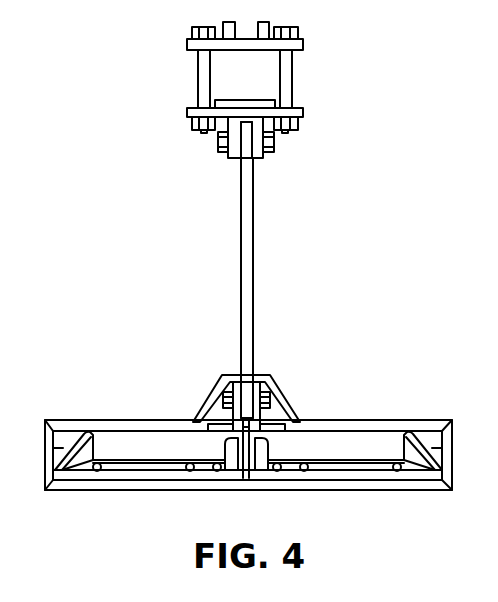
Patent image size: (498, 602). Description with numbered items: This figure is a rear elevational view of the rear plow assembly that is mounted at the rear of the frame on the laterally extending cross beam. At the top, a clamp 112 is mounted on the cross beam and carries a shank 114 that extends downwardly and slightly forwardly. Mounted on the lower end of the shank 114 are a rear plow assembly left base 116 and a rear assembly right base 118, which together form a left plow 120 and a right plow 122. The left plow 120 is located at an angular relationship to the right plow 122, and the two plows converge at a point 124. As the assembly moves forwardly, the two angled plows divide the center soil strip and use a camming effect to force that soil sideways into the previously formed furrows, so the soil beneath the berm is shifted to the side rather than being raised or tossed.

The clamp 112 is at (197, 85).
The shank 114 is at (253, 258).
The rear plow assembly left base 116 is at (335, 475).
The rear assembly right base 118 is at (158, 463).
The left plow 120 is at (347, 445).
The right plow 122 is at (163, 445).
The point 124 is at (248, 448).